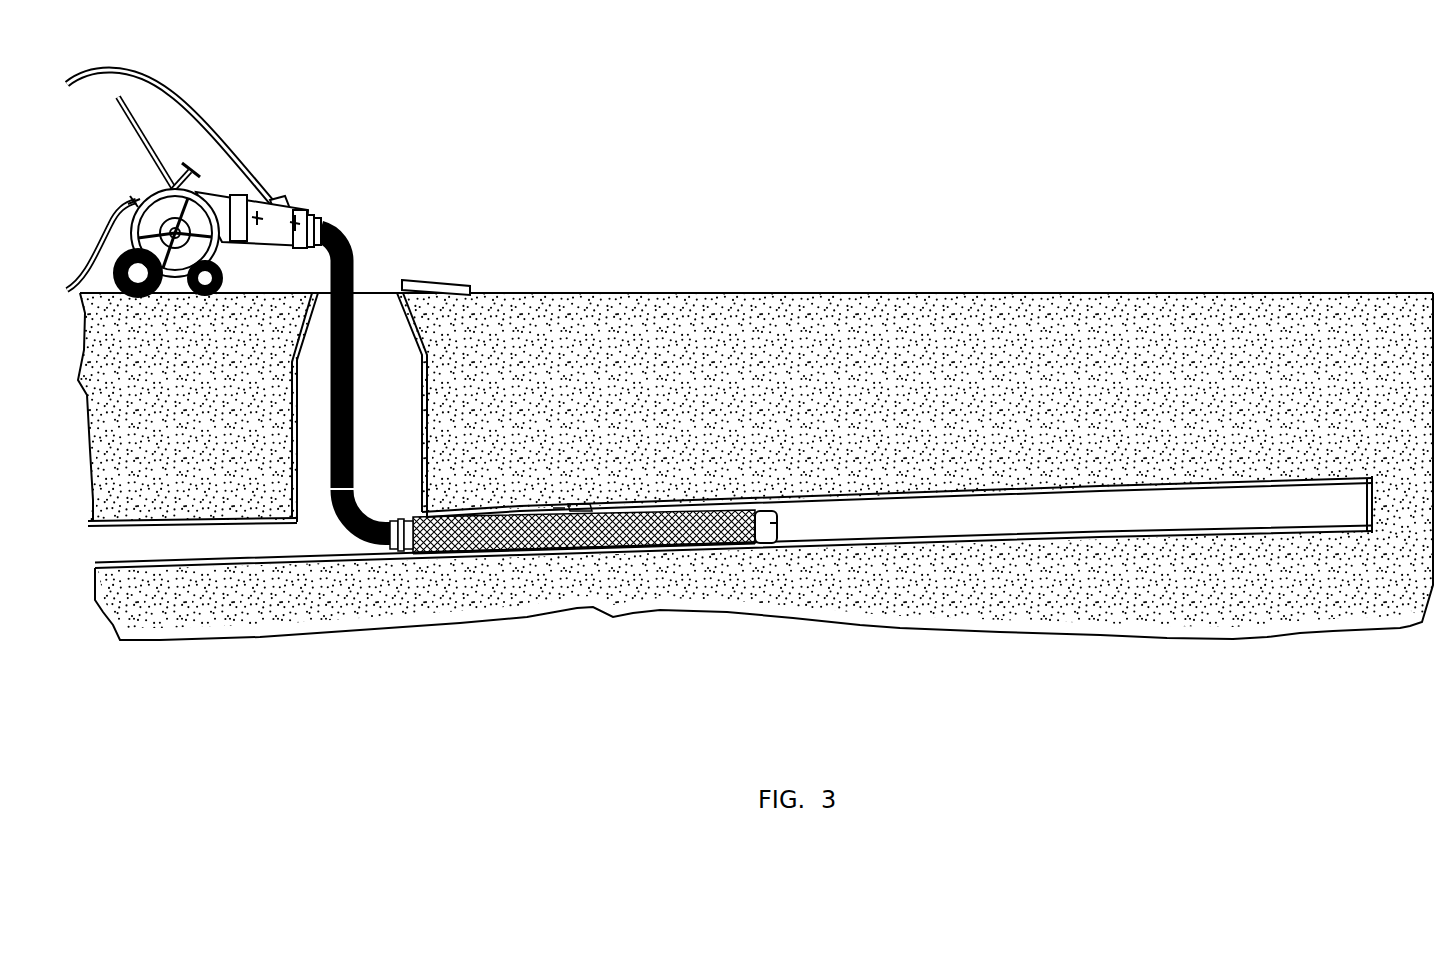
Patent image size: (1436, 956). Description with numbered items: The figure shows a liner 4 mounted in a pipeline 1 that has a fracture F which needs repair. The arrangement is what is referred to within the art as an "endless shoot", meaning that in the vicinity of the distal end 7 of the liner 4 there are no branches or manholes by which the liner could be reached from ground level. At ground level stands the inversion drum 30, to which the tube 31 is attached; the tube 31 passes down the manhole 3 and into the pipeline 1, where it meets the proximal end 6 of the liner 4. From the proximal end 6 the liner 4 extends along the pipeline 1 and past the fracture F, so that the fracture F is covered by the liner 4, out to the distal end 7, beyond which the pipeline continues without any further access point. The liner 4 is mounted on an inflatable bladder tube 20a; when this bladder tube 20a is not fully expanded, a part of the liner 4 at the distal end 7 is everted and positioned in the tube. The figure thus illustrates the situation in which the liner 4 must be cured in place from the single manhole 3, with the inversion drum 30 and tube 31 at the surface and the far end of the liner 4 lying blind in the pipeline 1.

The inversion drum 30 is at (274, 162).
The tube 31 is at (340, 232).
The manhole 3 is at (367, 298).
The fracture F is at (563, 488).
The pipeline 1 is at (262, 545).
The proximal end of liner 6 is at (417, 548).
The liner 4 is at (543, 540).
The distal end of liner 7 is at (757, 543).
The bladder tube 20a is at (778, 523).